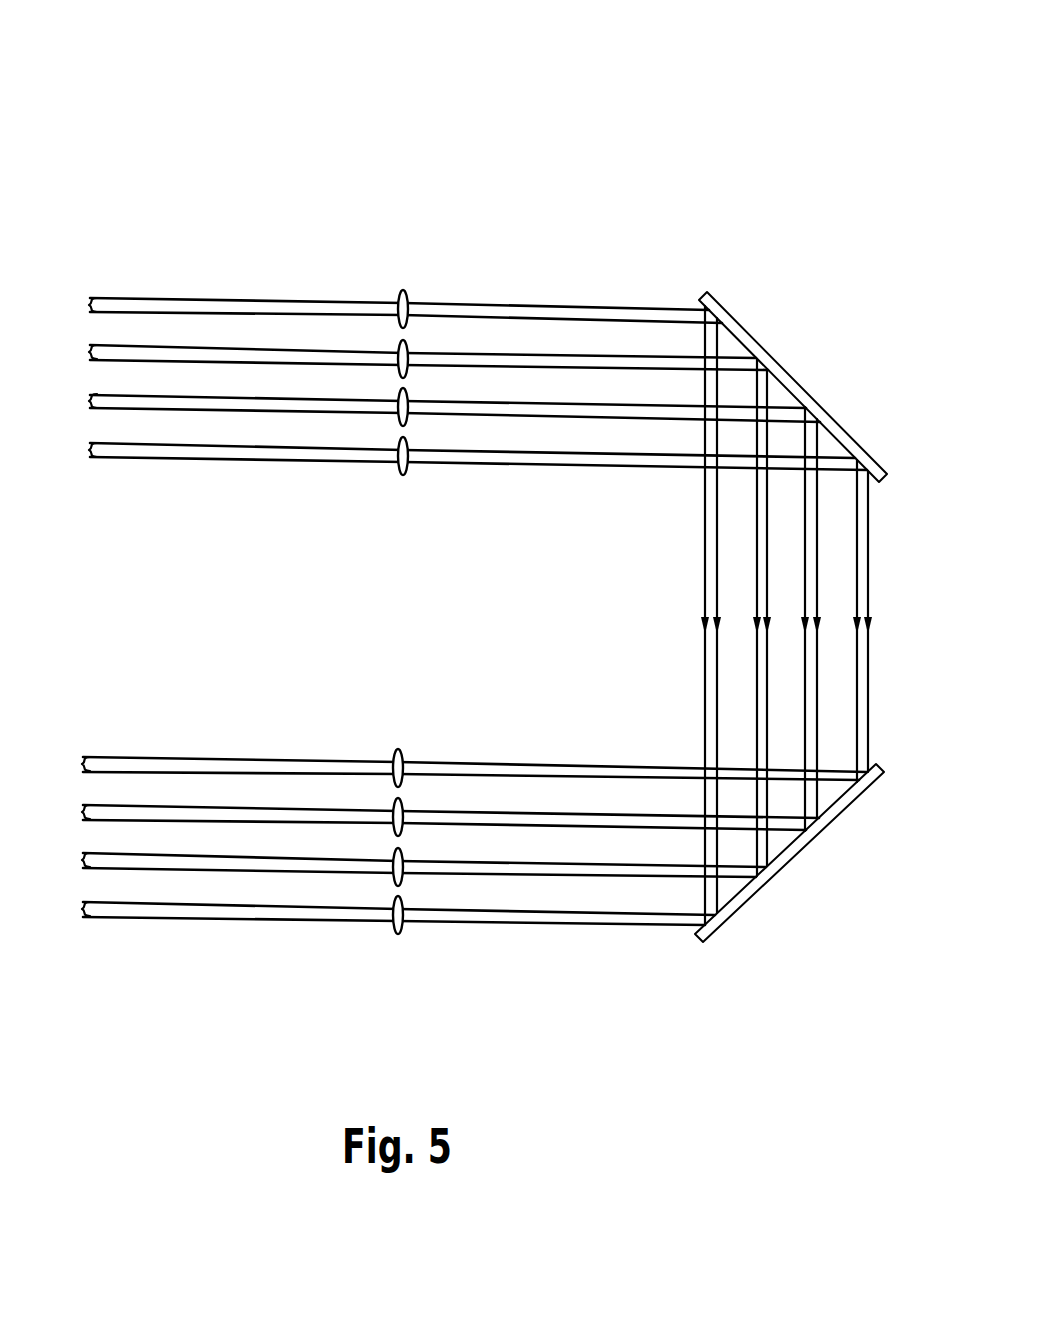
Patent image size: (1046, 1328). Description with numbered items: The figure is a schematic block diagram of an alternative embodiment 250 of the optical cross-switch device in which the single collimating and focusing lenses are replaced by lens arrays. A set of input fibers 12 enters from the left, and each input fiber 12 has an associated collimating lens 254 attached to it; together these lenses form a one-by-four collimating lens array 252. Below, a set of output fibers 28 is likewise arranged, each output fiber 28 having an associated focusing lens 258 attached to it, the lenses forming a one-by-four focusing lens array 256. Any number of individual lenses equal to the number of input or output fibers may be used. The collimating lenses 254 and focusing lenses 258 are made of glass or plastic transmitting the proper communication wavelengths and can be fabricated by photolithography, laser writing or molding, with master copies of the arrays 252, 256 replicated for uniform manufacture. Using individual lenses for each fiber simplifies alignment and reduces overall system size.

The alternative embodiment of the optical cross-switch device 250 is at (812, 84).
The input fibers 12 is at (215, 298).
The array of collimating lenses 252 is at (450, 371).
The collimating lens 254 is at (403, 290).
The output fibers 28 is at (243, 757).
The array of focusing lenses 256 is at (458, 830).
The focusing lens 258 is at (400, 748).